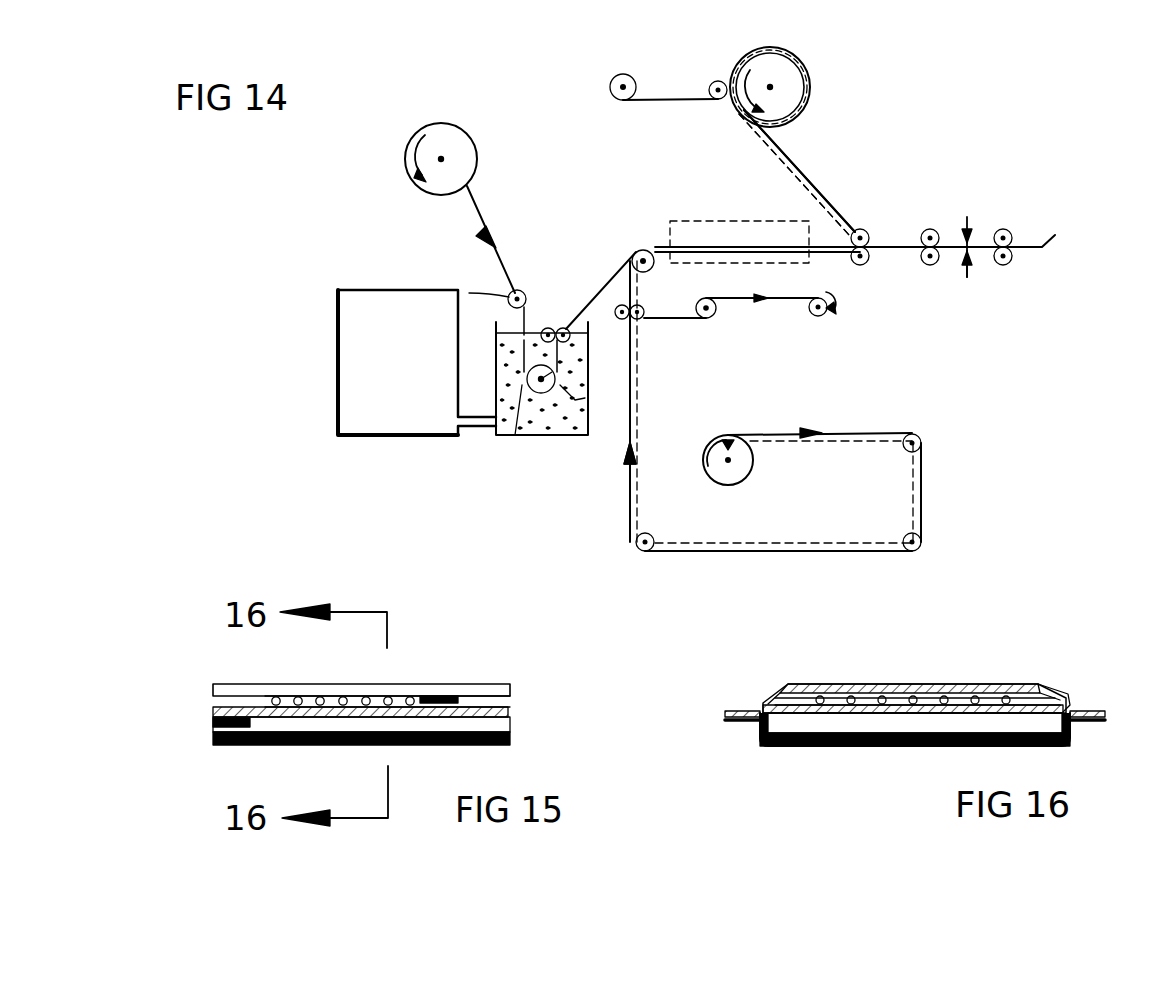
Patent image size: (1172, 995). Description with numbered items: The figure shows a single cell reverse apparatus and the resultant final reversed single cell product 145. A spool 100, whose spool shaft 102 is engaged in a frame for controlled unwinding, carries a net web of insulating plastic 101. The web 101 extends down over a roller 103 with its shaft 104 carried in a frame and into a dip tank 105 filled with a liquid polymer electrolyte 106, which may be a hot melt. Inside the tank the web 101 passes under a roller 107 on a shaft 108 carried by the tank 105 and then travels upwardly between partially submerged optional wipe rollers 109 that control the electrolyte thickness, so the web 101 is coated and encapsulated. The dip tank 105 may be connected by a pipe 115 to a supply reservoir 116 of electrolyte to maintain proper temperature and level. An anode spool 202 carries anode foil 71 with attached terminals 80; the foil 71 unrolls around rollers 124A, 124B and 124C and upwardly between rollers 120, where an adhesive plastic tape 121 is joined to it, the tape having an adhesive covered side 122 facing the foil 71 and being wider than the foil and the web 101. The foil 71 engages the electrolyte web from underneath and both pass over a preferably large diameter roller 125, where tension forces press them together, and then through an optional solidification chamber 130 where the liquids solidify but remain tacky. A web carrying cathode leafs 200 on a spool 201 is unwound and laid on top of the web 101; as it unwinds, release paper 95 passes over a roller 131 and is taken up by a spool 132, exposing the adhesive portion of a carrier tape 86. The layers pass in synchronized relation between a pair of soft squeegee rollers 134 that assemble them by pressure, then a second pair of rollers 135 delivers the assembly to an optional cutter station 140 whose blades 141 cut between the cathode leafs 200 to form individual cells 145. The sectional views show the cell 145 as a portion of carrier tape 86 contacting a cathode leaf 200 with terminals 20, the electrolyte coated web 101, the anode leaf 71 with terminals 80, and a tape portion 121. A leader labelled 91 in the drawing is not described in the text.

In FIG. 14, the spool 100 is at (434, 124).
In FIG. 14, the net web of insulating plastic 101 is at (475, 232).
In FIG. 15, the net web of insulating plastic 101 is at (508, 708).
In FIG. 16, the net web of insulating plastic 101 is at (862, 703).
In FIG. 14, the spool shaft 102 is at (445, 157).
In FIG. 14, the roller 103 is at (506, 296).
In FIG. 14, the shaft 104 is at (520, 290).
In FIG. 14, the dip tank 105 is at (540, 482).
In FIG. 14, the polymer electrolyte 106 is at (560, 437).
In FIG. 14, the roller 107 is at (496, 438).
In FIG. 14, the shaft 108 is at (573, 437).
In FIG. 14, the wipe rollers 109 is at (552, 328).
In FIG. 14, the pipe 115 is at (465, 438).
In FIG. 14, the supply reservoir 116 is at (305, 373).
In FIG. 14, the rollers 120 is at (640, 322).
In FIG. 14, the adhesive plastic tape 121 is at (684, 322).
In FIG. 15, the adhesive plastic tape 121 is at (323, 744).
In FIG. 16, the adhesive plastic tape 121 is at (782, 746).
In FIG. 14, the adhesive covered side 122 is at (670, 315).
In FIG. 14, the roller 124A is at (922, 439).
In FIG. 14, the roller 124B is at (930, 536).
In FIG. 14, the roller 124C is at (650, 536).
In FIG. 14, the roller 125 is at (628, 248).
In FIG. 14, the solidification chamber 130 is at (696, 215).
In FIG. 14, the roller 131 is at (712, 80).
In FIG. 14, the spool 132 is at (608, 82).
In FIG. 14, the soft squeegee rollers 134 is at (860, 228).
In FIG. 14, the second pair of rollers 135 is at (928, 230).
In FIG. 14, the cutter station 140 is at (970, 220).
In FIG. 14, the blades 141 is at (972, 276).
In FIG. 14, the cells 145 is at (1055, 235).
In FIG. 15, the cells 145 is at (260, 781).
In FIG. 14, the cathode leafs 200 is at (762, 123).
In FIG. 15, the cathode leafs 200 is at (230, 692).
In FIG. 16, the cathode leafs 200 is at (1020, 682).
In FIG. 14, the spool 201 is at (792, 95).
In FIG. 14, the anode spool 202 is at (749, 464).
In FIG. 15, the terminals 20 is at (440, 695).
In FIG. 14, the anode foil 71 is at (636, 444).
In FIG. 15, the anode foil 71 is at (510, 724).
In FIG. 14, the terminals 80 is at (632, 496).
In FIG. 15, the terminals 80 is at (213, 720).
In FIG. 14, the carrier tape 86 is at (778, 162).
In FIG. 15, the carrier tape 86 is at (326, 694).
In FIG. 16, the carrier tape 86 is at (772, 696).
In FIG. 14, the web path 91 is at (783, 154).
In FIG. 14, the release paper 95 is at (655, 106).